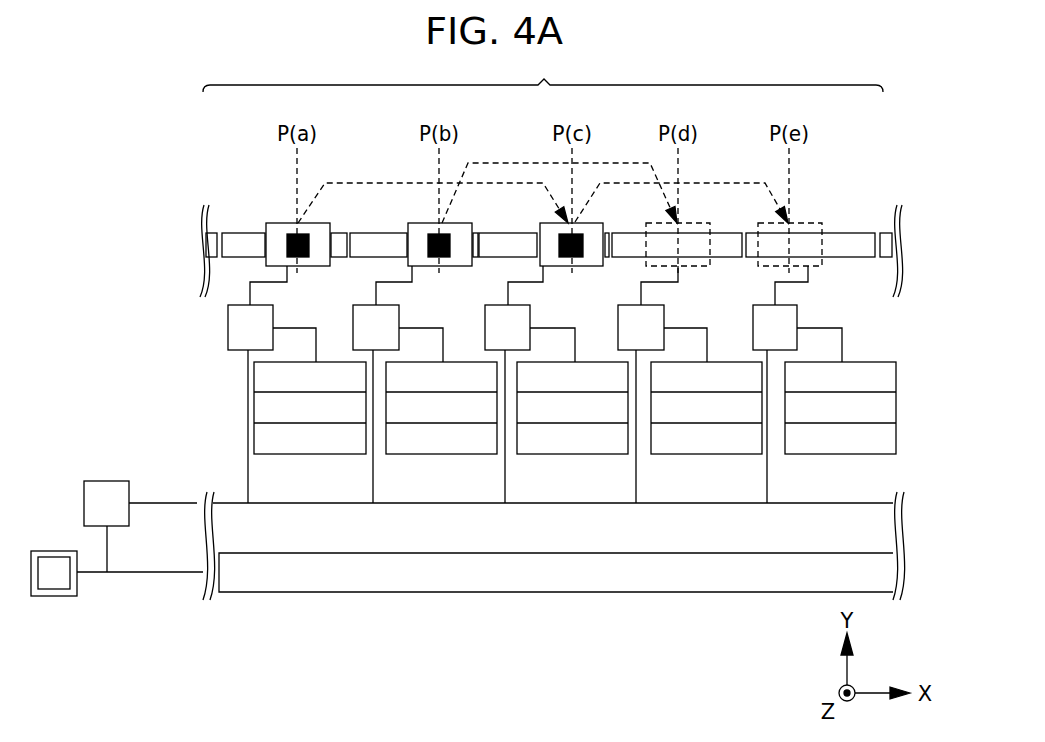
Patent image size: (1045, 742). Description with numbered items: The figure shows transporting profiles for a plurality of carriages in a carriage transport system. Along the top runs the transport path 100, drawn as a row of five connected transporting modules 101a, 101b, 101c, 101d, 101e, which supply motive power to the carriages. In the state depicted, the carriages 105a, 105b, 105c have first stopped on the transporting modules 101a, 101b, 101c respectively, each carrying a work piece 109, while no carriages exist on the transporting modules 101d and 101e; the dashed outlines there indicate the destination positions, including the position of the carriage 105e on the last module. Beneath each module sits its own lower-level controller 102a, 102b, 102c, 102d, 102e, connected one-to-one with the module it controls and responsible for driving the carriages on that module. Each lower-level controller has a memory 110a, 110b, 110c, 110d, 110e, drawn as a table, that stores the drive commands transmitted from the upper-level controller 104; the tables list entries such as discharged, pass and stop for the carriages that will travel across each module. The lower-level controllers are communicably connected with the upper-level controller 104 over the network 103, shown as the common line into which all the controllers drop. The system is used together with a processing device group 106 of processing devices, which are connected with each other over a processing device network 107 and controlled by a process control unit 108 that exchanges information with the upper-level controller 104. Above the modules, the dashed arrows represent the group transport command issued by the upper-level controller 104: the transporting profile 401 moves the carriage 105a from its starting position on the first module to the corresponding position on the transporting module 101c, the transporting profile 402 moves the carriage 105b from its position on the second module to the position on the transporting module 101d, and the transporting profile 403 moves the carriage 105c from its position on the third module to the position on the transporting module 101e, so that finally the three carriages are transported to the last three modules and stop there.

The transport path 100 is at (543, 72).
The transporting module 101a is at (247, 233).
The transporting module 101b is at (366, 233).
The transporting module 101c is at (503, 233).
The transporting module 101d is at (624, 233).
The transporting module 101e is at (846, 233).
The lower-level controller 102a is at (228, 318).
The lower-level controller 102b is at (353, 330).
The lower-level controller 102c is at (485, 330).
The lower-level controller 102d is at (618, 330).
The lower-level controller 102e is at (753, 330).
The network 103 is at (155, 503).
The upper-level controller 104 is at (110, 481).
The carriage 105a is at (306, 267).
The carriage 105b is at (448, 267).
The carriage 105c is at (580, 267).
The carriage 105e is at (770, 266).
The processing device group 106 is at (308, 595).
The processing device network 107 is at (130, 575).
The process control unit 108 is at (52, 597).
The work piece 109 is at (296, 234).
The memory 110a is at (310, 455).
The memory 110b is at (441, 455).
The memory 110c is at (572, 455).
The memory 110d is at (706, 455).
The memory 110e is at (840, 455).
The transporting profile 401 is at (366, 183).
The transporting profile 402 is at (511, 163).
The transporting profile 403 is at (738, 183).